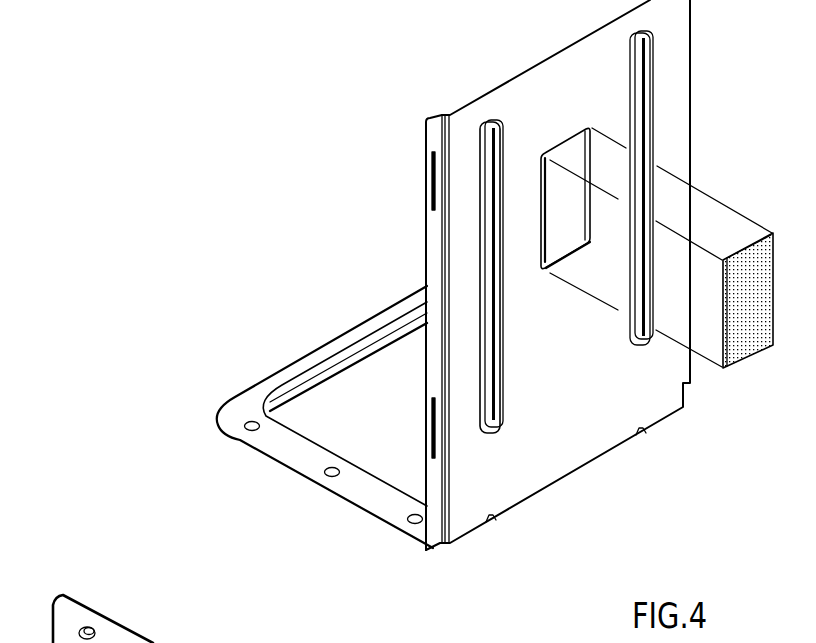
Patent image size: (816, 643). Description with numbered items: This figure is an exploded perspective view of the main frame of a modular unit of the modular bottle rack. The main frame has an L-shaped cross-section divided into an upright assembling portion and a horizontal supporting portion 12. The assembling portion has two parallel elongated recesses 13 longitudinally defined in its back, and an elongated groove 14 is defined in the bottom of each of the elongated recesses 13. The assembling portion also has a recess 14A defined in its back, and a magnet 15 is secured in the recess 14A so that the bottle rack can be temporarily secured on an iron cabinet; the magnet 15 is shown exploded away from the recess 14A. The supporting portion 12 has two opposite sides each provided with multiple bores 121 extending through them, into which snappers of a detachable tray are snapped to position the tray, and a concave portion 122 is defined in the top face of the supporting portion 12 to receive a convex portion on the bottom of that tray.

The supporting portion 12 is at (236, 381).
The bores 121 is at (250, 423).
The concave portion 122 is at (382, 438).
The elongated recesses 13 is at (500, 358).
The elongated groove 14 is at (485, 395).
The recess 14A is at (563, 213).
The magnet 15 is at (743, 332).